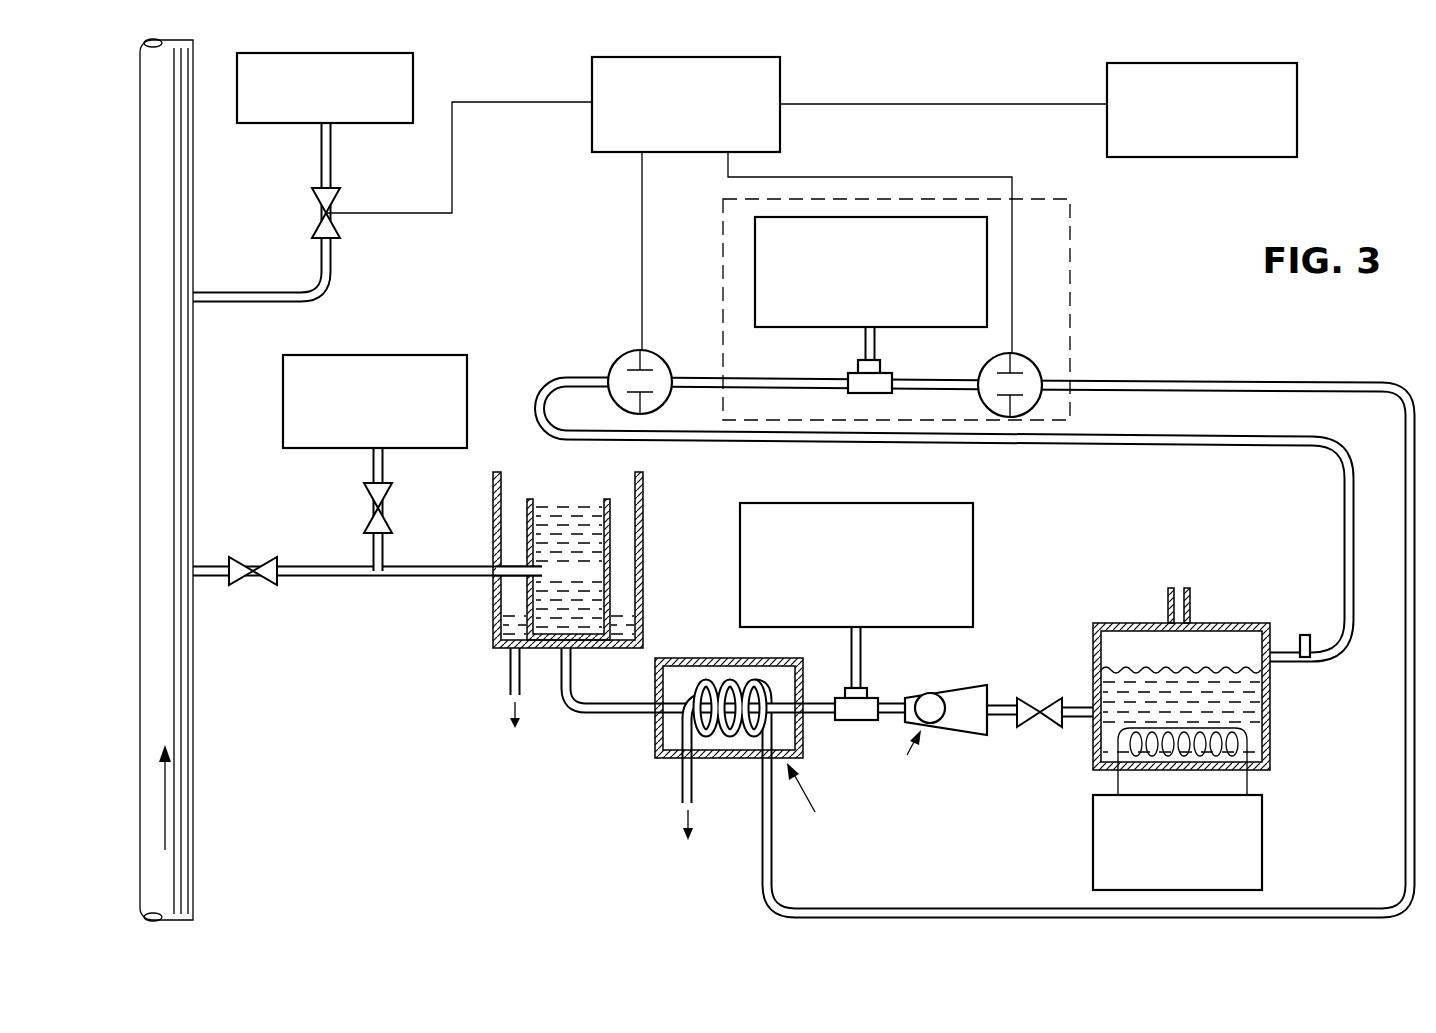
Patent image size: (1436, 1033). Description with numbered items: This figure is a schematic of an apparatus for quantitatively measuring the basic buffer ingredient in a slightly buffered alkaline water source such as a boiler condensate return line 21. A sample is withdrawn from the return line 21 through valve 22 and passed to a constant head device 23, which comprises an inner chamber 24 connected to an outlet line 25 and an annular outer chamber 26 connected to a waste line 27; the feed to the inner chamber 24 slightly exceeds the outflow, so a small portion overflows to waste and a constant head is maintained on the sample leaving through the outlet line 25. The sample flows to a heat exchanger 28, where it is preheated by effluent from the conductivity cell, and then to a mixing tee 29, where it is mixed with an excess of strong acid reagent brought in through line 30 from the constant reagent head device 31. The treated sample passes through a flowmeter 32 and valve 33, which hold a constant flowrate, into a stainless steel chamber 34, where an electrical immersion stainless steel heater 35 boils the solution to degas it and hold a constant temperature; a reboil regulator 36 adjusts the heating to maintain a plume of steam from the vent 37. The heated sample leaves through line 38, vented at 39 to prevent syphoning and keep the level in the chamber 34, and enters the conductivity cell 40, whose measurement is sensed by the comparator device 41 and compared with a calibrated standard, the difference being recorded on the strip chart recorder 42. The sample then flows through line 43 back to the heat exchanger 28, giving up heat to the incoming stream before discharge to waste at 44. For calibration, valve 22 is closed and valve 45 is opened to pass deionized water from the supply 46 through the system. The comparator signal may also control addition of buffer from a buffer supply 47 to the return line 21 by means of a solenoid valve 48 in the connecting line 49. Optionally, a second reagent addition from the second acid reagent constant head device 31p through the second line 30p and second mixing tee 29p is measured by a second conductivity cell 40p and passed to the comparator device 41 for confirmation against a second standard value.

The return line 21 is at (195, 772).
The valve 22 is at (268, 583).
The constant head device 23 is at (482, 613).
The inner chamber 24 is at (612, 576).
The outlet line 25 is at (620, 710).
The annular outer chamber 26 is at (561, 556).
The waste line 27 is at (508, 678).
The heat exchanger 28 is at (728, 657).
The mixing tee 29 is at (855, 712).
The mixing tee 29p is at (878, 393).
The line 30 is at (858, 665).
The line 30p is at (868, 348).
The constant reagent head device 31 is at (975, 528).
The acid reagent constant head device 31p is at (755, 254).
The flowmeter 32 is at (938, 695).
The valve 33 is at (1048, 700).
The stainless steel chamber 34 is at (1202, 679).
The electrical immersion stainless steel heater 35 is at (1245, 735).
The reboil regulator 36 is at (1262, 840).
The vent 37 is at (1190, 605).
The line 38 is at (590, 375).
The vent 39 is at (1298, 640).
The conductivity cell 40 is at (650, 358).
The conductivity cell 40p is at (1012, 352).
The comparator device 41 is at (782, 72).
The strip chart recorder 42 is at (1297, 102).
The line 43 is at (1187, 385).
The waste discharge 44 is at (684, 800).
The valve 45 is at (366, 508).
The supply of deionized water 46 is at (385, 355).
The buffer supply 47 is at (412, 72).
The solenoid valve 48 is at (314, 213).
The connecting line 49 is at (331, 277).